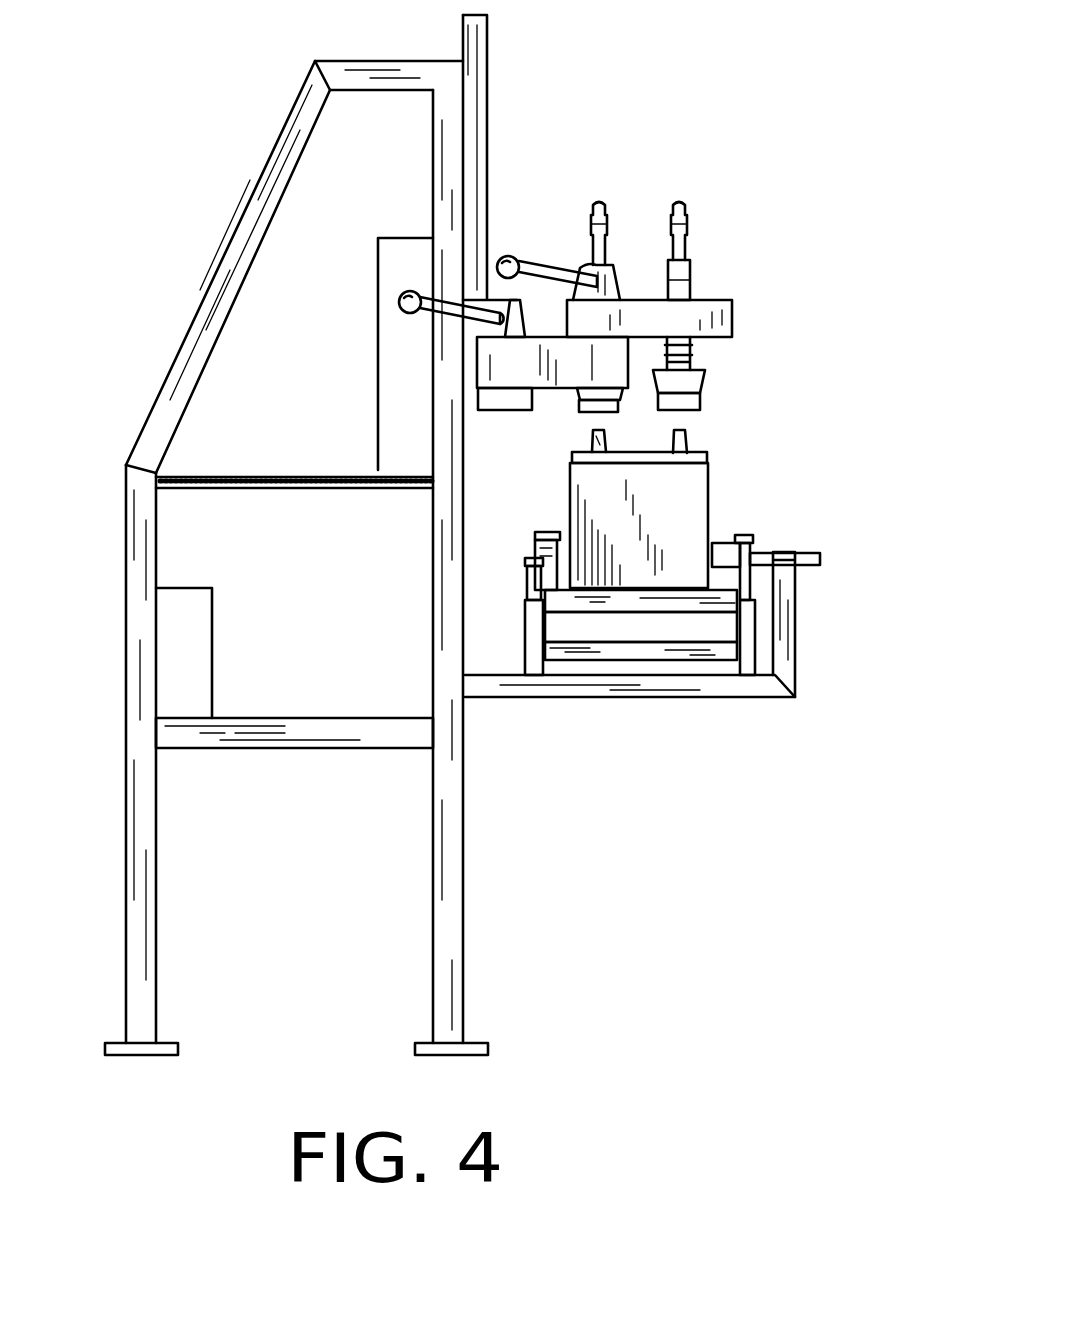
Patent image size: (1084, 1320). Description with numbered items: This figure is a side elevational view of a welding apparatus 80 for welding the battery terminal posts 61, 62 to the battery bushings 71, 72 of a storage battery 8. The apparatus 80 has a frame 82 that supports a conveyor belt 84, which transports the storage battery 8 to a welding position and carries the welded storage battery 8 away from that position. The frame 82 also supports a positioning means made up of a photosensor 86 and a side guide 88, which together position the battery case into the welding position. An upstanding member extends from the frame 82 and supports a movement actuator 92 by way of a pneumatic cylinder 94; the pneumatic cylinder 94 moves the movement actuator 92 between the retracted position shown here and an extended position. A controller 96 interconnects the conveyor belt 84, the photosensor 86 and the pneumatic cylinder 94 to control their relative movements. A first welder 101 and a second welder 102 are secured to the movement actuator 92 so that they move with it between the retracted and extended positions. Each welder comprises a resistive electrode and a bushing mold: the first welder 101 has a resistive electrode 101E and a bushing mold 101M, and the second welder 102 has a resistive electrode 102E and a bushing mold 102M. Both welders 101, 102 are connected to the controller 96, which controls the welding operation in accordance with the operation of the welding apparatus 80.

The welding apparatus 80 is at (707, 92).
The frame 82 is at (462, 863).
The movement actuator 92 is at (480, 105).
The pneumatic cylinder 94 is at (397, 270).
The controller 96 is at (183, 667).
The second welder 102 is at (595, 388).
The resistive electrode 102E is at (590, 393).
The bushing mold 102M is at (578, 398).
The first welder 101 is at (690, 375).
The resistive electrode 101E is at (670, 393).
The bushing mold 101M is at (690, 410).
The battery terminal post 61 is at (703, 463).
The battery terminal post 62 is at (570, 467).
The battery bushing 71 is at (683, 433).
The battery bushing 72 is at (588, 436).
The storage battery 8 is at (668, 567).
The photosensor 86 is at (553, 625).
The conveyor belt 84 is at (583, 597).
The side guide 88 is at (545, 597).